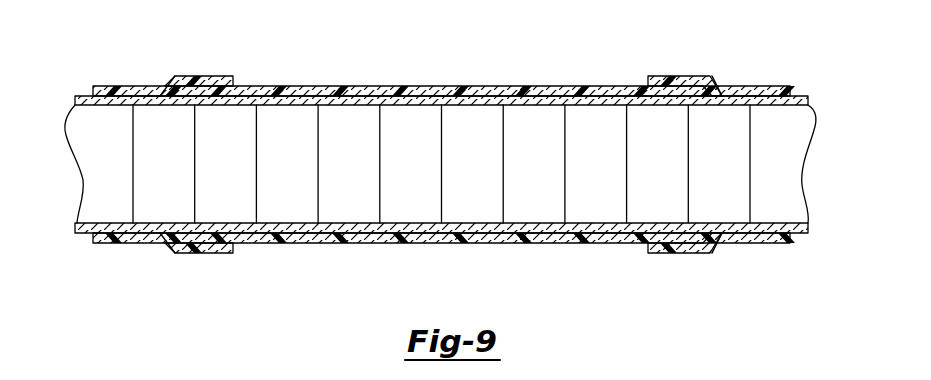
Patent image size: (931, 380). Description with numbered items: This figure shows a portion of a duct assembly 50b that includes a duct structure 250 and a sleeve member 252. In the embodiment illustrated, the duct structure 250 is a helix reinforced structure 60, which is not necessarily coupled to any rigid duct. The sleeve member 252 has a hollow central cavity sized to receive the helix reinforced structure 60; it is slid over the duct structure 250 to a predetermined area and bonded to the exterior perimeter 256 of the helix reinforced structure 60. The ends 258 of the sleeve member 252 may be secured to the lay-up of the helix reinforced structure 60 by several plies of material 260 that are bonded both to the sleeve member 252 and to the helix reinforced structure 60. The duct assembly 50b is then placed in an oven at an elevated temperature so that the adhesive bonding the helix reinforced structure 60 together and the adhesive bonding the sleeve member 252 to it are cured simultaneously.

The duct assembly 50b is at (425, 128).
The helix reinforced structure 60 is at (293, 213).
The duct structure 250 is at (459, 207).
The sleeve member 252 is at (353, 87).
The exterior perimeter 256 is at (81, 97).
The ends of sleeve member 258 is at (191, 96).
The plies of material 260 is at (158, 96).